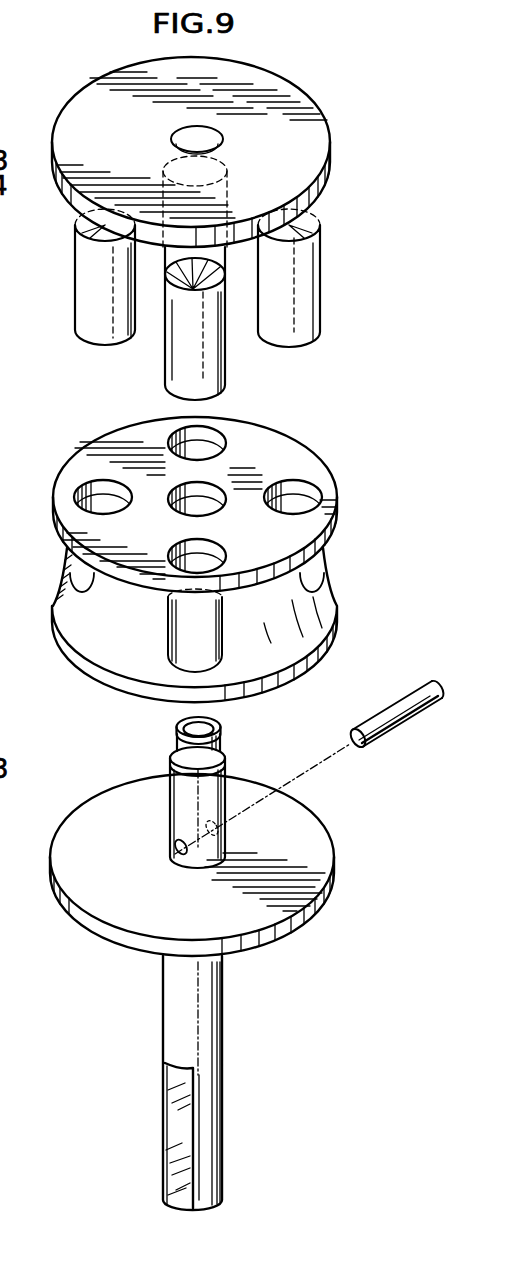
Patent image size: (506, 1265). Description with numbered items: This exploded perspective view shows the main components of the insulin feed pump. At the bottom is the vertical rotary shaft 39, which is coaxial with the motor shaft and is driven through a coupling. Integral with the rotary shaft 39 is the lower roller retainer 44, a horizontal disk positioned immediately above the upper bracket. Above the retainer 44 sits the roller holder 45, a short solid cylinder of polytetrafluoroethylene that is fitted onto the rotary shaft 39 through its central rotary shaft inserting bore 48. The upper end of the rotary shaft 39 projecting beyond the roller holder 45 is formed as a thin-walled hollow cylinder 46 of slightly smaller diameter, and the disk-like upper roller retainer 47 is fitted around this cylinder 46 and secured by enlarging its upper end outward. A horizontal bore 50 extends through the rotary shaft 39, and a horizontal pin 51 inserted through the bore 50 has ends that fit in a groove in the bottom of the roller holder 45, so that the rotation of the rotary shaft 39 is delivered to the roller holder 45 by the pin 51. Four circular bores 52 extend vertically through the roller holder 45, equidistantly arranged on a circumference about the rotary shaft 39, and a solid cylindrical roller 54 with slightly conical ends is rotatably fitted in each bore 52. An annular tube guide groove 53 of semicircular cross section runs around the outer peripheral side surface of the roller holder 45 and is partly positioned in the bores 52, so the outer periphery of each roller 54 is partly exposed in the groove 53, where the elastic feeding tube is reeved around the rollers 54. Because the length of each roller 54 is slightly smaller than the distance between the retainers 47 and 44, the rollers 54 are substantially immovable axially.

The rotary shaft 39 is at (197, 1030).
The roller retainer 44 is at (303, 920).
The roller holder 45 is at (283, 458).
The hollow cylinder 46 is at (218, 730).
The roller retainer 47 is at (318, 141).
The rotary shaft inserting bore 48 is at (207, 497).
The horizontal bore 50 is at (172, 843).
The horizontal pin 51 is at (390, 725).
The circular bores 52 is at (173, 430).
The annular tube guide groove 53 is at (95, 608).
The roller 54 is at (217, 250).